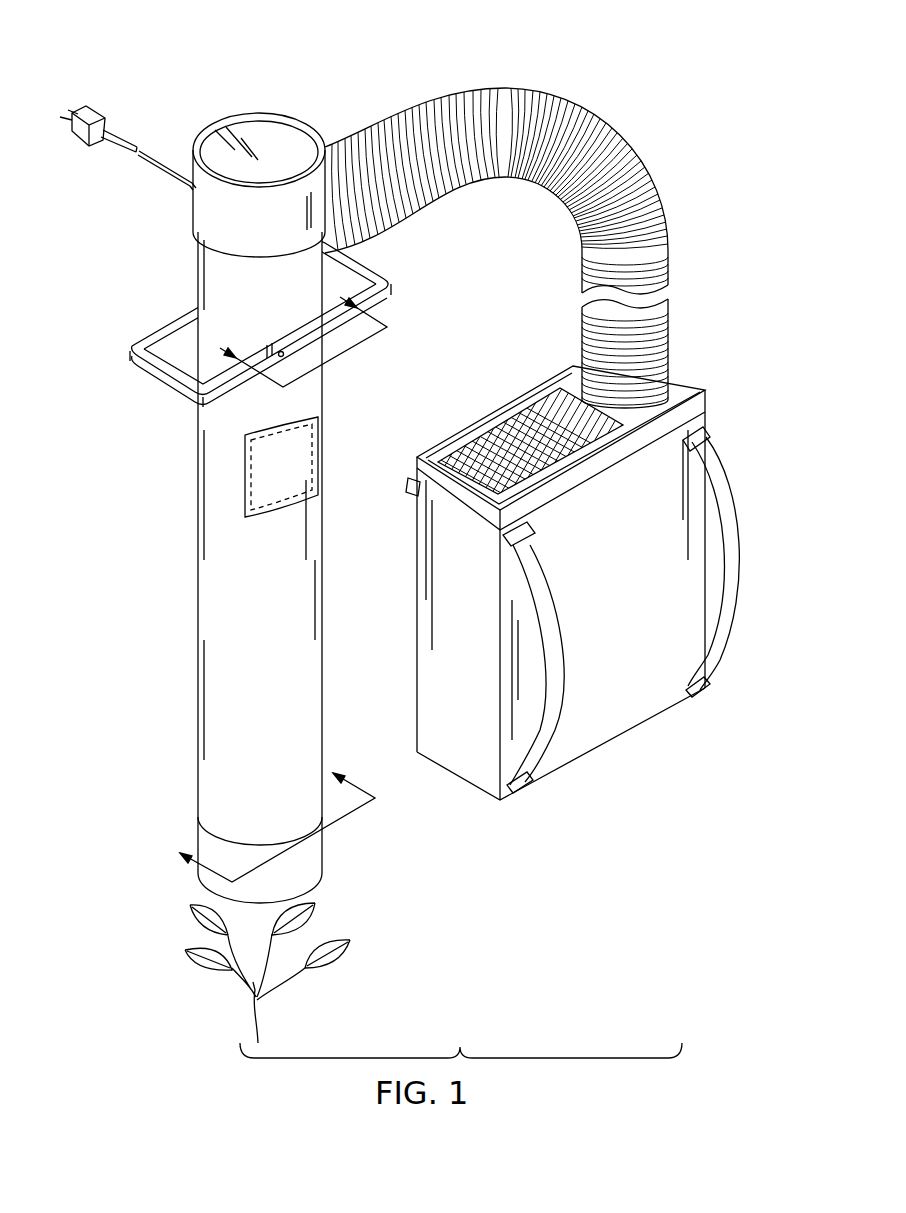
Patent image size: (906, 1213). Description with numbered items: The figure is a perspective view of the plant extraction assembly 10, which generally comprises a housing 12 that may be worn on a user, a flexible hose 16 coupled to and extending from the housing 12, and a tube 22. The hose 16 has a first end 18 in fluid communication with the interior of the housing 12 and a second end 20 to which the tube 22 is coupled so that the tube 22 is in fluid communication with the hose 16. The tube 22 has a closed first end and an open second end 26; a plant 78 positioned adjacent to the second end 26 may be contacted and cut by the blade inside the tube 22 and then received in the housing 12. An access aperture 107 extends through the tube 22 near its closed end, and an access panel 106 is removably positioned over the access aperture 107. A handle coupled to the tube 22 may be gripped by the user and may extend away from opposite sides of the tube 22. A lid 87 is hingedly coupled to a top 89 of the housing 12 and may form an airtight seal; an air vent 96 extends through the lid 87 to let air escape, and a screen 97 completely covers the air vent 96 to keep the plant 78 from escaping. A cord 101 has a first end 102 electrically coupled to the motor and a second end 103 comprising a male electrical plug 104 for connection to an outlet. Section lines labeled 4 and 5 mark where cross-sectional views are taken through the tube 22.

The plant extraction assembly 10 is at (664, 138).
The housing 12 is at (589, 559).
The flexible hose 16 is at (544, 80).
The first end of the hose 18 is at (575, 471).
The second end of the hose 20 is at (325, 158).
The tube 22 is at (178, 542).
The second end of the tube 26 is at (210, 838).
The plant 78 is at (233, 977).
The lid 87 is at (625, 456).
The top of the housing 89 is at (420, 438).
The air vent 96 is at (458, 445).
The screen 97 is at (522, 420).
The cord 101 is at (141, 130).
The first end of the cord 102 is at (193, 192).
The second end of the cord 103 is at (85, 116).
The male electrical plug 104 is at (76, 150).
The access panel 106 is at (245, 473).
The access aperture 107 is at (317, 452).
The section line 4- 4 is at (303, 327).
The section line 5- 5 is at (263, 817).